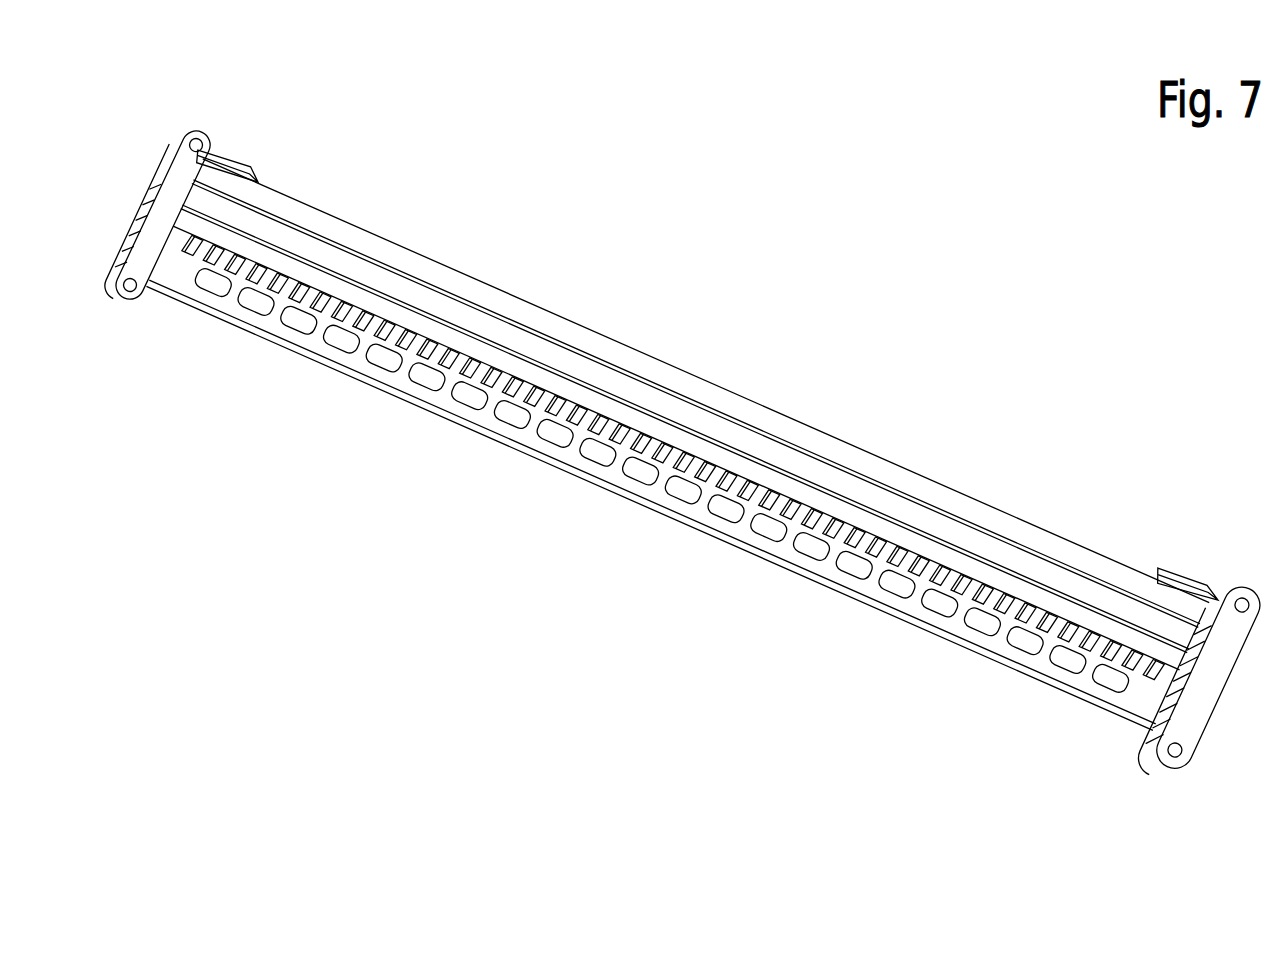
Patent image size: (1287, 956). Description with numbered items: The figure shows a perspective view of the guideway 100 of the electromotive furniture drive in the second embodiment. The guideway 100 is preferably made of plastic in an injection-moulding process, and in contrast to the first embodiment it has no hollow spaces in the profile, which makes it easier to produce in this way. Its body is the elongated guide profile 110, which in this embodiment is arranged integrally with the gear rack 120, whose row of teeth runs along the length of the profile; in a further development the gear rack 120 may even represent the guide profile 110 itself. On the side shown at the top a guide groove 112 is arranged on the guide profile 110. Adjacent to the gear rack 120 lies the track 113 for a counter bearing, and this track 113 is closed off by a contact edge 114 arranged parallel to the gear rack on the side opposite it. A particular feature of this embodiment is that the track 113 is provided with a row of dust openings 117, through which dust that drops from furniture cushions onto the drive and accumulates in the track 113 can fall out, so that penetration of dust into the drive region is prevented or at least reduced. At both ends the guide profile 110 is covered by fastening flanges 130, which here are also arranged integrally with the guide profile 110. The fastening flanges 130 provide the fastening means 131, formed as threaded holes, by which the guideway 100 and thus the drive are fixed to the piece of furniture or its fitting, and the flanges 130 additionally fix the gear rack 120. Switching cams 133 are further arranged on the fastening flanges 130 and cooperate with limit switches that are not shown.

The guideway 100 is at (1012, 457).
The guide profile 110 is at (455, 288).
The guide groove 112 is at (335, 263).
The track 113 is at (1160, 690).
The contact edge 114 is at (935, 625).
The dust openings 117 is at (298, 318).
The gear rack 120 is at (884, 558).
The fastening flange 130 is at (152, 207).
The fastening means 131 is at (132, 290).
The switching cams 133 is at (248, 165).